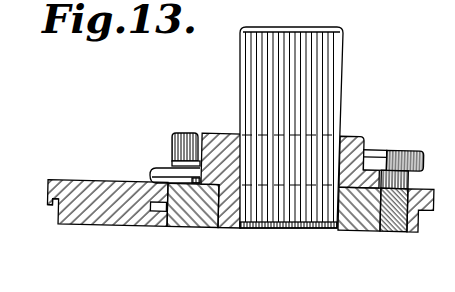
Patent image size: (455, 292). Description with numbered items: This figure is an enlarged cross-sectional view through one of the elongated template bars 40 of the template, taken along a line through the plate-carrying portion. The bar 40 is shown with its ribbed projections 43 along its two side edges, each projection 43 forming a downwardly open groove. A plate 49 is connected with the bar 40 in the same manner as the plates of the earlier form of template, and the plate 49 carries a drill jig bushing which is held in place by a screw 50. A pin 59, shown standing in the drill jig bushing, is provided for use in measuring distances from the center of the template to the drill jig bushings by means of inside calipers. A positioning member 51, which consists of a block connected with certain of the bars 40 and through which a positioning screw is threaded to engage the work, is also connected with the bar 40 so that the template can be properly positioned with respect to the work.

The template bar 40 is at (78, 198).
The ribbed projection 43 is at (47, 200).
The plate 49 is at (193, 218).
The screw 50 is at (386, 162).
The positioning member 51 is at (417, 159).
The pin 59 is at (256, 82).